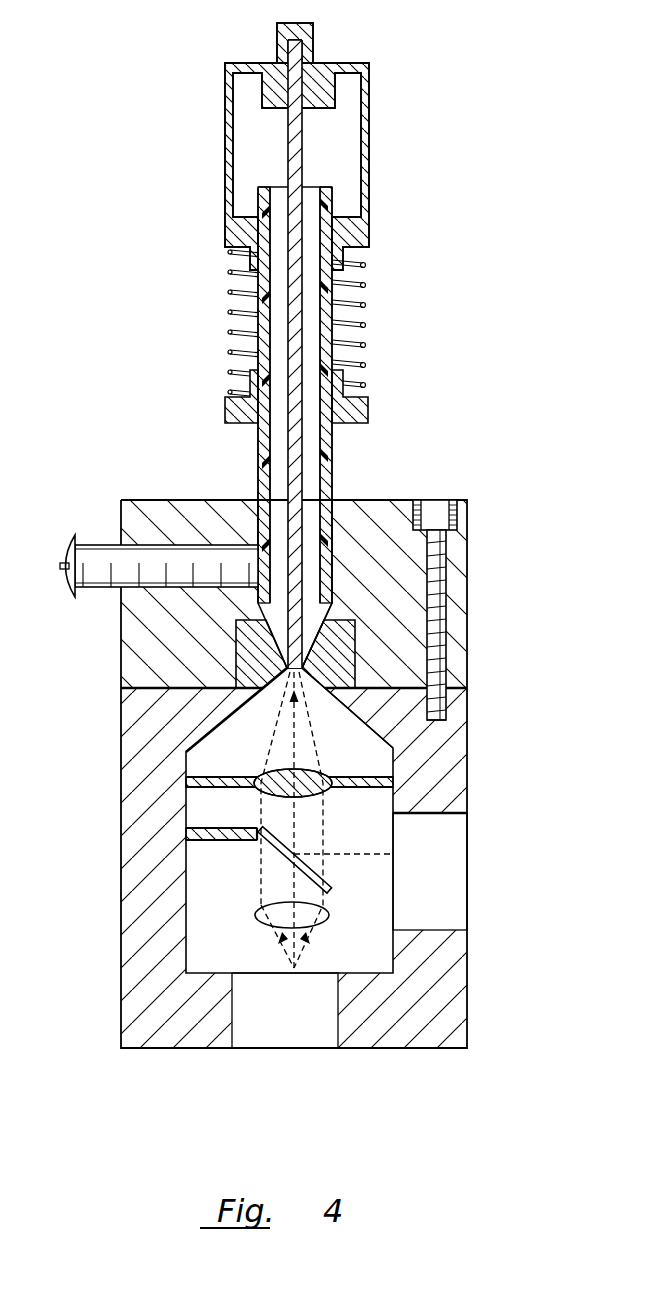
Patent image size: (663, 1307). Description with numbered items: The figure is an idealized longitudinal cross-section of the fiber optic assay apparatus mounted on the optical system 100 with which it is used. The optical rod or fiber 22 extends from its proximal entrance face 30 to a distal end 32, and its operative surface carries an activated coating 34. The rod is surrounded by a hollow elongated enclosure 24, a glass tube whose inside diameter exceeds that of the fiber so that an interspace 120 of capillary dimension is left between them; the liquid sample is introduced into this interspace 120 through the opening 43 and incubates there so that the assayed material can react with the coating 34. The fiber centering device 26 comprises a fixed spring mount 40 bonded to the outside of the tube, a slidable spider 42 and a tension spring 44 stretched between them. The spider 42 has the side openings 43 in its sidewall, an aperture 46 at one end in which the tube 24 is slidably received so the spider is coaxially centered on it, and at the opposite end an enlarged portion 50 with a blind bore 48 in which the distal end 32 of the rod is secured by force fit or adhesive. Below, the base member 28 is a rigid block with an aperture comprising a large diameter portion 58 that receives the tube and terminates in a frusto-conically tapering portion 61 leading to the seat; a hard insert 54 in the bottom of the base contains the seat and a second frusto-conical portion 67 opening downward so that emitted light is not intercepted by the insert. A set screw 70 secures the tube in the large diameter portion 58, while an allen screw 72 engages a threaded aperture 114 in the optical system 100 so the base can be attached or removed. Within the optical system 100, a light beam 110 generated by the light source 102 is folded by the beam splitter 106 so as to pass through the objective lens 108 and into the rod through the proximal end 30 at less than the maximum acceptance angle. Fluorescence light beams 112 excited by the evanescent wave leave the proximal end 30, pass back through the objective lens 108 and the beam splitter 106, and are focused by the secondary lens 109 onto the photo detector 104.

The optical rod or fiber 22 is at (288, 128).
The hollow elongated enclosure 24 is at (294, 354).
The fiber centering device 26 is at (285, 137).
The base member 28 is at (480, 602).
The proximal end or entrance face 30 is at (291, 682).
The distal or terminal end 32 is at (290, 37).
The coating 34 is at (306, 318).
The fixed spring mount 40 is at (366, 405).
The slidable spider 42 is at (367, 118).
The opening 43 is at (356, 149).
The tension spring 44 is at (362, 288).
The aperture 46 is at (320, 247).
The blind bore 48 is at (300, 58).
The enlarged portion 50 is at (302, 25).
The hard insert 54 is at (244, 648).
The large diameter portion 58 is at (334, 497).
The frusto-conically tapering portion 61 is at (318, 633).
The second frusto-conical portion 67 is at (305, 686).
The set screw 70 is at (112, 590).
The allen screw 72 is at (440, 590).
The optical system 100 is at (344, 872).
The light source 102 is at (462, 834).
The photo detector 104 is at (316, 1042).
The beam splitter 106 is at (262, 860).
The objective lens 108 is at (260, 790).
The secondary lens 109 is at (262, 912).
The light beam 110 is at (361, 853).
The light beams 112 is at (278, 732).
The threaded aperture 114 is at (442, 708).
The interspace 120 is at (278, 358).